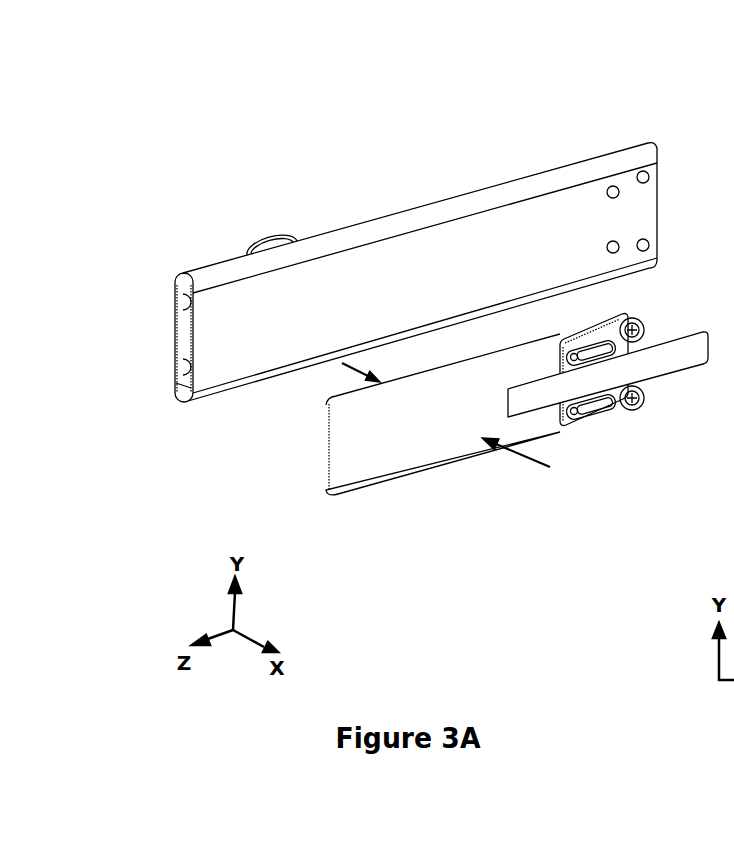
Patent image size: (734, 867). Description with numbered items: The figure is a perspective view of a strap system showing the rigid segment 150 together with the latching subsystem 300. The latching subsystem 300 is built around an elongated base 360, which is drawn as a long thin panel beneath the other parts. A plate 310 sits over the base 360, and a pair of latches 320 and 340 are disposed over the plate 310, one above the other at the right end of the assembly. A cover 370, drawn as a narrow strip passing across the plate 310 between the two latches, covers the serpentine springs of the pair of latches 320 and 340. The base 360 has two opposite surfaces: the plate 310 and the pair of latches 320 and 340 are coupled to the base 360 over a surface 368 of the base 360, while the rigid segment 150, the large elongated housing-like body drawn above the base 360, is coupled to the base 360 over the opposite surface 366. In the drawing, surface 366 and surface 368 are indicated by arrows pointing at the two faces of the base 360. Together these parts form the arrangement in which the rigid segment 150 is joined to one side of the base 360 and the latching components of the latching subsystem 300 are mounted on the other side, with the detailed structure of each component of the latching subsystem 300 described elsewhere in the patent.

The rigid segment 150 is at (445, 212).
The latching subsystem 300 is at (521, 452).
The plate 310 is at (604, 382).
The latch 320 is at (580, 423).
The latch 340 is at (572, 340).
The base 360 is at (378, 472).
The surface 366 is at (345, 379).
The surface 368 is at (516, 465).
The cover 370 is at (688, 347).